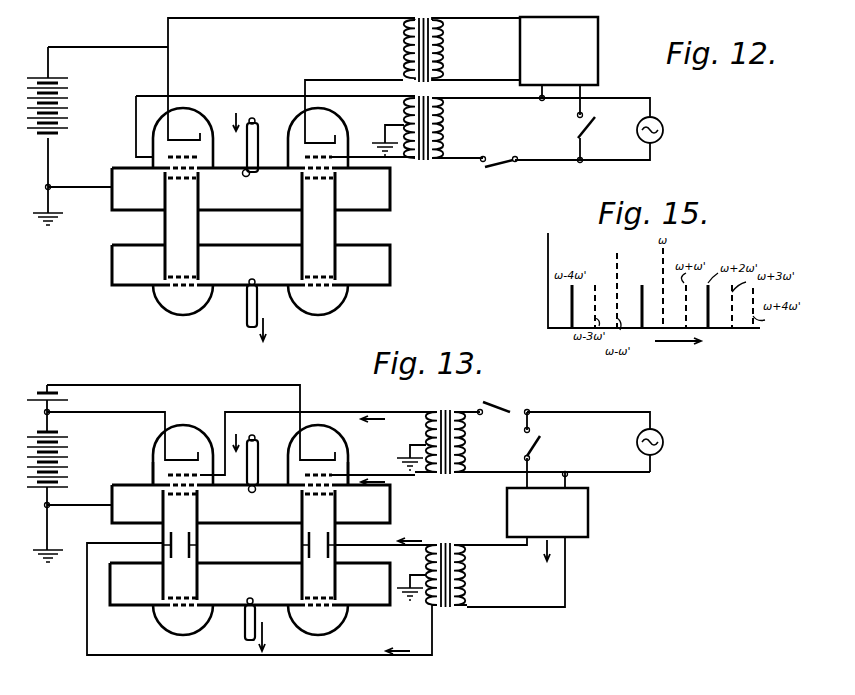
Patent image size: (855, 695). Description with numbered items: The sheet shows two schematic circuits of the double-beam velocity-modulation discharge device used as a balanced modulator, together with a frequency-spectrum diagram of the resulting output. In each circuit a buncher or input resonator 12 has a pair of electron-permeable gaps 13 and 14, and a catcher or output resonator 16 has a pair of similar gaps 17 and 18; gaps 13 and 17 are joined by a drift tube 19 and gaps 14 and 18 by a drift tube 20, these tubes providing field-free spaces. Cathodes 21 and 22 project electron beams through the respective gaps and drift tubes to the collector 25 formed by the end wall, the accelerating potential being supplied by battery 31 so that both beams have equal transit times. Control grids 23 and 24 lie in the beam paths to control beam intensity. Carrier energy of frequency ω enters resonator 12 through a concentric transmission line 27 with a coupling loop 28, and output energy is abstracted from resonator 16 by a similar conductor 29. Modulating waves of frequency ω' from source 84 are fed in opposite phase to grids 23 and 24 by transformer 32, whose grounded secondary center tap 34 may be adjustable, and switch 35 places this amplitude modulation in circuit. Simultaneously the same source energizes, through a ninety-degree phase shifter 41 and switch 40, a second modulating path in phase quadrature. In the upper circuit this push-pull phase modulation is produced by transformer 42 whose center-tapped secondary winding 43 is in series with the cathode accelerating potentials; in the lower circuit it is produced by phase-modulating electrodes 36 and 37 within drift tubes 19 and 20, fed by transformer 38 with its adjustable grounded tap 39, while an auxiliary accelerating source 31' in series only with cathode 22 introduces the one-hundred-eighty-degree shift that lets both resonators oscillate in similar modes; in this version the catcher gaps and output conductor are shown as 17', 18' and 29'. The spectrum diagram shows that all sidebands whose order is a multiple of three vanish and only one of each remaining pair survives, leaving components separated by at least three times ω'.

In FIG. 12, the input resonator 12 is at (390, 193).
In FIG. 13, the input resonator 12 is at (390, 499).
In FIG. 12, the electron permeable gap 13 is at (166, 179).
In FIG. 13, the electron permeable gap 13 is at (166, 494).
In FIG. 12, the electron permeable gap 14 is at (302, 179).
In FIG. 13, the electron permeable gap 14 is at (335, 494).
In FIG. 12, the output resonator 16 is at (390, 263).
In FIG. 13, the output resonator 16 is at (124, 607).
In FIG. 12, the electron permeable gap 17 is at (162, 268).
In FIG. 13, the grid electrode 17' is at (158, 589).
In FIG. 12, the electron permeable gap 18 is at (300, 249).
In FIG. 13, the grid electrode 18' is at (338, 588).
In FIG. 12, the drift tube 19 is at (164, 232).
In FIG. 13, the drift tube 19 is at (163, 542).
In FIG. 12, the drift tube 20 is at (336, 228).
In FIG. 13, the drift tube 20 is at (337, 555).
In FIG. 12, the cathode 21 is at (184, 134).
In FIG. 13, the cathode 21 is at (182, 455).
In FIG. 12, the cathode 22 is at (328, 140).
In FIG. 13, the cathode 22 is at (322, 458).
In FIG. 13, the control grid 23 is at (151, 463).
In FIG. 13, the control grid 24 is at (340, 470).
In FIG. 12, the collector 25 is at (178, 316).
In FIG. 12, the concentric transmission line 27 is at (258, 135).
In FIG. 13, the concentric transmission line 27 is at (258, 448).
In FIG. 12, the coupling loop 28 is at (243, 172).
In FIG. 12, the high-frequency energy conductor 29 is at (267, 312).
In FIG. 13, the output tube 29' is at (261, 635).
In FIG. 12, the battery 31 is at (47, 127).
In FIG. 13, the battery 31 is at (68, 486).
In FIG. 13, the auxiliary accelerating voltage source 31' is at (47, 382).
In FIG. 12, the transformer 32 is at (422, 160).
In FIG. 13, the transformer 32 is at (444, 412).
In FIG. 12, the center tap 34 is at (402, 123).
In FIG. 12, the switch 35 is at (495, 167).
In FIG. 13, the switch 35 is at (506, 405).
In FIG. 13, the phase-modulating electrode 36 is at (199, 547).
In FIG. 13, the phase-modulating electrode 37 is at (301, 547).
In FIG. 13, the transformer 38 is at (446, 544).
In FIG. 13, the center-tap 39 is at (262, 596).
In FIG. 12, the switch 40 is at (593, 128).
In FIG. 13, the switch 40 is at (539, 442).
In FIG. 12, the phase shifter 41 is at (600, 45).
In FIG. 13, the phase shifter 41 is at (588, 512).
In FIG. 12, the transformer 42 is at (444, 20).
In FIG. 12, the center-tapped secondary winding 43 is at (403, 36).
In FIG. 12, the source 84 is at (661, 120).
In FIG. 13, the source 84 is at (652, 428).